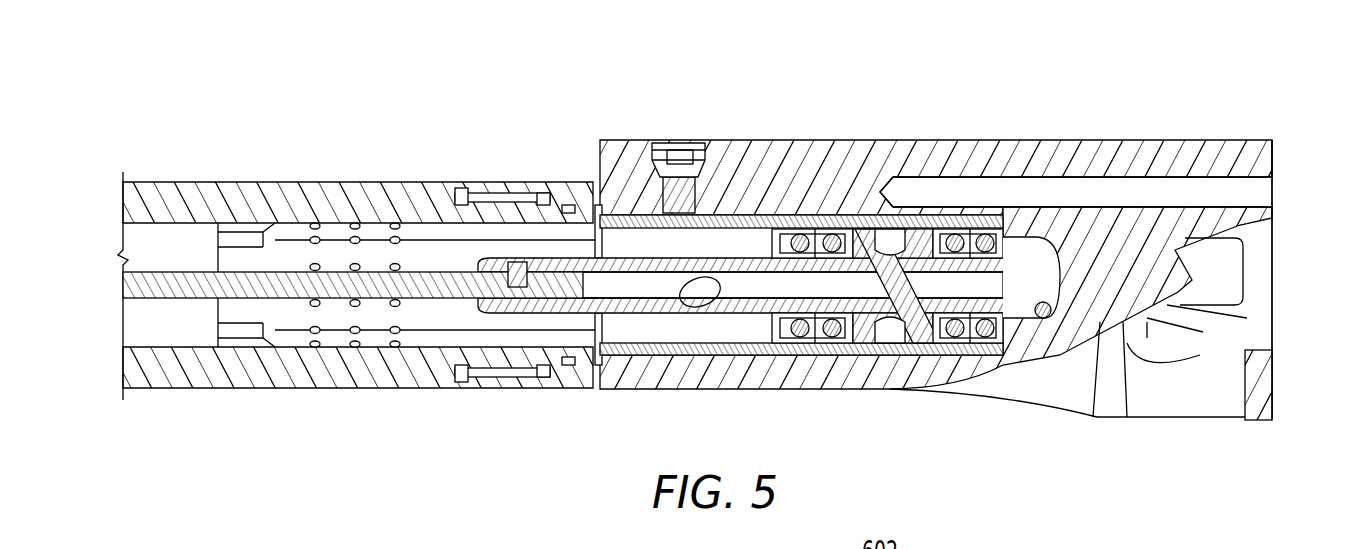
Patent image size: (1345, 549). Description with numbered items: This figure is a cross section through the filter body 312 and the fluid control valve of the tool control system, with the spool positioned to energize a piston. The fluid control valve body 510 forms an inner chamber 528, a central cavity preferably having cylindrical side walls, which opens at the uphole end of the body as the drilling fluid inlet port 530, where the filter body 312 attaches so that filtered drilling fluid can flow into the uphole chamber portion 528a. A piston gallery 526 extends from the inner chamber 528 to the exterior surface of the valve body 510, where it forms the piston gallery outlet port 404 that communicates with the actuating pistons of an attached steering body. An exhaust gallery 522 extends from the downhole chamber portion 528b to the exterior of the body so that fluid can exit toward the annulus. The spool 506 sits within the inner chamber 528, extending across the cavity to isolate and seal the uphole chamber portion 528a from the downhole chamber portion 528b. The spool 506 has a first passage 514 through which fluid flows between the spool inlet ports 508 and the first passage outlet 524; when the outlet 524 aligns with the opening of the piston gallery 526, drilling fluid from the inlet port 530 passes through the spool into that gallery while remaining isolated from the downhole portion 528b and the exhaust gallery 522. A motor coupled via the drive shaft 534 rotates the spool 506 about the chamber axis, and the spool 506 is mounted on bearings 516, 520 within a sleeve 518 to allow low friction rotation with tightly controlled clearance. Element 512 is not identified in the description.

The filter body 312 is at (410, 205).
The drive shaft 534 is at (313, 237).
The fluid control valve body 510 is at (800, 160).
The uphole chamber portion 528a is at (755, 242).
The spool 506 is at (633, 258).
The spool inlet ports 508 is at (692, 303).
The first passage 514 is at (760, 287).
The drilling fluid inlet port 530 is at (486, 326).
The bearing 516 is at (807, 343).
The sleeve 518 is at (900, 330).
The first passage outlet 524 is at (893, 227).
The bearing 520 is at (975, 345).
The downhole chamber portion 528b is at (1038, 257).
The exhaust gallery 522 is at (1058, 245).
The inner chamber 528 is at (1085, 50).
The piston gallery 526 is at (933, 190).
The screw 512 is at (672, 138).
The piston gallery outlet port 404 is at (1268, 192).